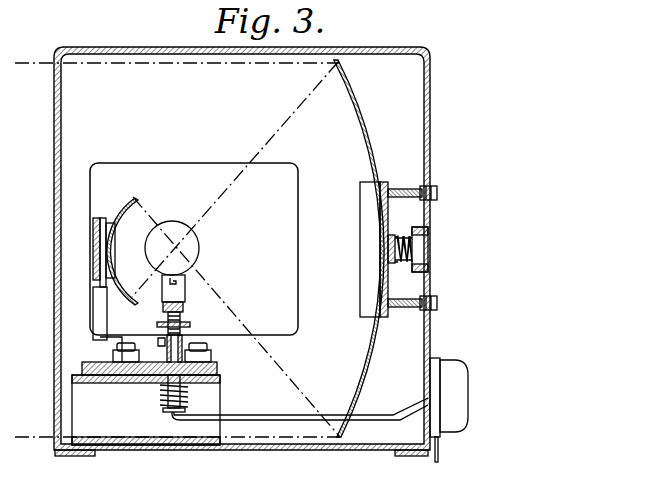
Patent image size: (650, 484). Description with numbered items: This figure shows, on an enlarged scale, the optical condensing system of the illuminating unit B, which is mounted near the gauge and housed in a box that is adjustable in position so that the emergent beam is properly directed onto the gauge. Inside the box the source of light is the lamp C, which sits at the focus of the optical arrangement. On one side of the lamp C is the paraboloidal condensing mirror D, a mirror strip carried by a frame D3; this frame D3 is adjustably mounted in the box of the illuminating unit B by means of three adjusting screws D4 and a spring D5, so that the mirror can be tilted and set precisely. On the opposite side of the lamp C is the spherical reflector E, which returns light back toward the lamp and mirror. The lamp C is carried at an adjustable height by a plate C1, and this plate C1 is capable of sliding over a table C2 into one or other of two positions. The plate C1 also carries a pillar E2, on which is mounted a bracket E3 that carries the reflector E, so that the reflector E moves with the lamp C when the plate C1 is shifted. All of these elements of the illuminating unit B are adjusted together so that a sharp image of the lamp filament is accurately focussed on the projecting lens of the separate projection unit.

The illuminating unit B is at (118, 50).
The paraboloidal condensing mirror D is at (357, 103).
The frame D3 is at (388, 218).
The adjusting screws D4 is at (413, 189).
The spring D5 is at (428, 262).
The lamp C is at (176, 230).
The plate C1 is at (220, 372).
The table C2 is at (205, 402).
The spherical reflector E is at (119, 222).
The pillar E2 is at (100, 310).
The bracket E3 is at (115, 243).